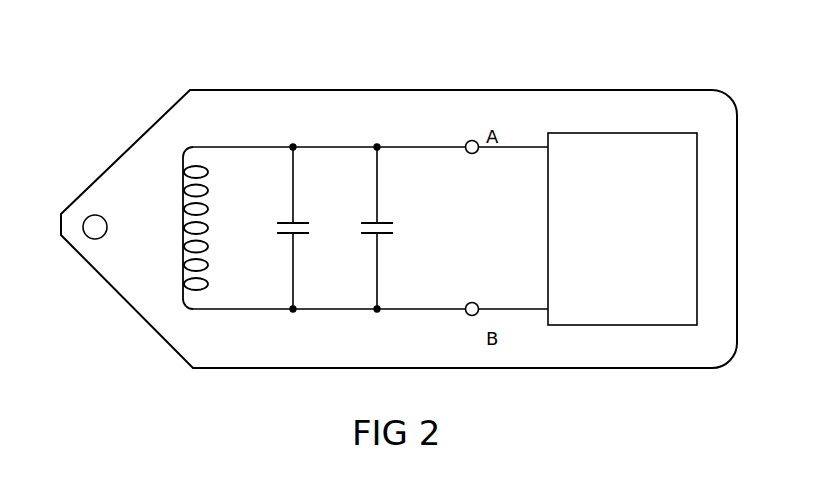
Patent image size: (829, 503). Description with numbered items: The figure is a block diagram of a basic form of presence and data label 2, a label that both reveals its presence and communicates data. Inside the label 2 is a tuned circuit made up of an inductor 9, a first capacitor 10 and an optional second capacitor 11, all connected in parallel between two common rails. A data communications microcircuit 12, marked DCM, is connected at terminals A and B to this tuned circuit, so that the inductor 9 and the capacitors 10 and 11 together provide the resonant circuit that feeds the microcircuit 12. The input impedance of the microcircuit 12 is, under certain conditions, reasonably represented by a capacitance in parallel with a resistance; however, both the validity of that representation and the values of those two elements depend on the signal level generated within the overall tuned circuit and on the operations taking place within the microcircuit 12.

The presence and data label 2 is at (238, 90).
The inductor 9 is at (183, 203).
The first capacitor 10 is at (303, 222).
The second capacitor 11 is at (387, 222).
The data communications microcircuit 12 is at (598, 133).